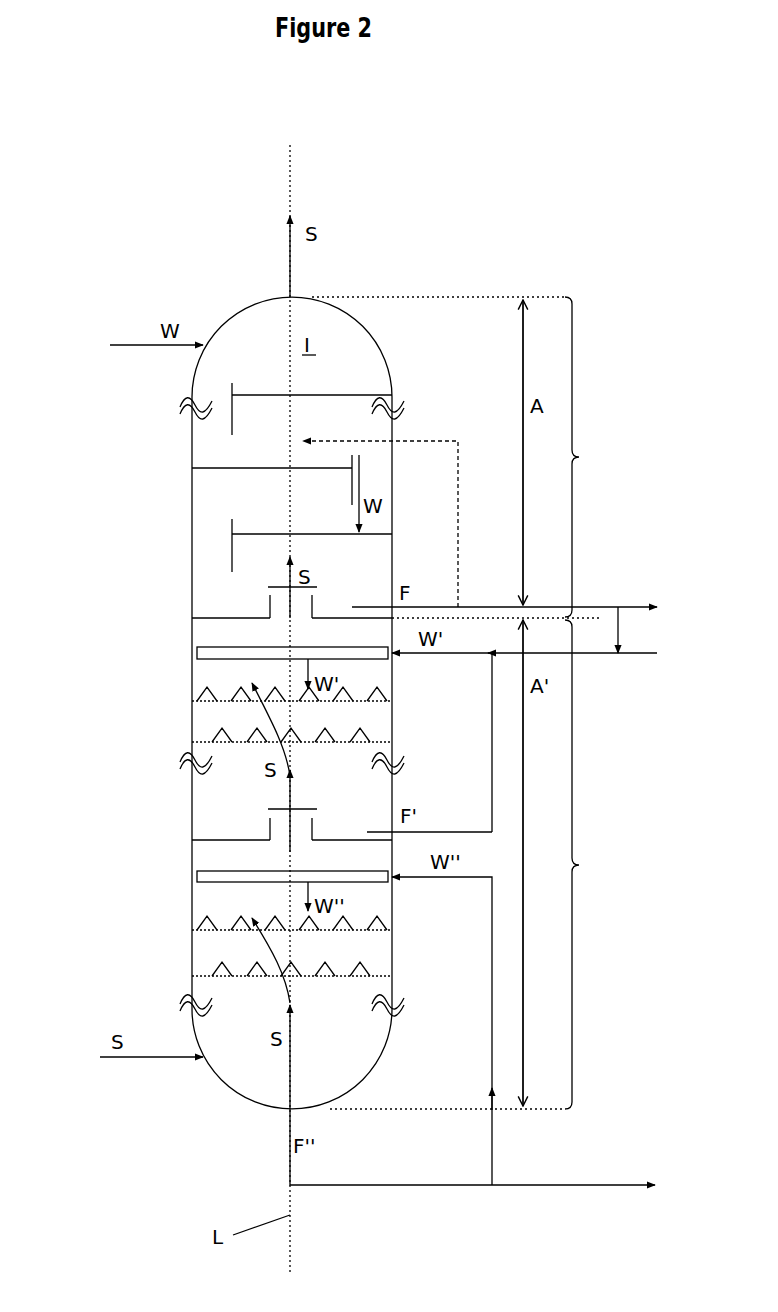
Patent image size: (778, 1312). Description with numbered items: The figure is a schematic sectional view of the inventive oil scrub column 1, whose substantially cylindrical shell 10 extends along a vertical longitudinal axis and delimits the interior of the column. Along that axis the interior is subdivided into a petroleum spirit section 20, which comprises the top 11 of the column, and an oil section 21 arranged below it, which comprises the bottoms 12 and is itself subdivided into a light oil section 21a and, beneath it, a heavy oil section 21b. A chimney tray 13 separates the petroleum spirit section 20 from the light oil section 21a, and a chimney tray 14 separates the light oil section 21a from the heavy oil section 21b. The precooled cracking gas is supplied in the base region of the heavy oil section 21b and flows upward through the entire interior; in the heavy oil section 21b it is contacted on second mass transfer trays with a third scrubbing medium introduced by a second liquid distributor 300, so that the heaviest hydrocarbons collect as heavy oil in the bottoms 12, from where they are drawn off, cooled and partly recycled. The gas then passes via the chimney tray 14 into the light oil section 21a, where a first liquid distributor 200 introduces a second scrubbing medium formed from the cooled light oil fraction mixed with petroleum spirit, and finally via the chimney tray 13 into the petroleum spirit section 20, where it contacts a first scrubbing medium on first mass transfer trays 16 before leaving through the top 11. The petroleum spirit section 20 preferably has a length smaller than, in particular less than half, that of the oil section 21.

The oil scrub column 1 is at (222, 278).
The shell 10 is at (192, 497).
The top 11 is at (310, 310).
The bottoms 12 is at (318, 1088).
The chimney tray 13 is at (227, 617).
The chimney tray 14 is at (247, 841).
The first mass transfer trays 16 is at (335, 393).
The petroleum spirit section 20 is at (587, 457).
The oil section 21 is at (587, 864).
The light oil section 21a is at (212, 801).
The heavy oil section 21b is at (212, 952).
The first liquid distributor 200 is at (202, 655).
The second liquid distributor 300 is at (197, 876).